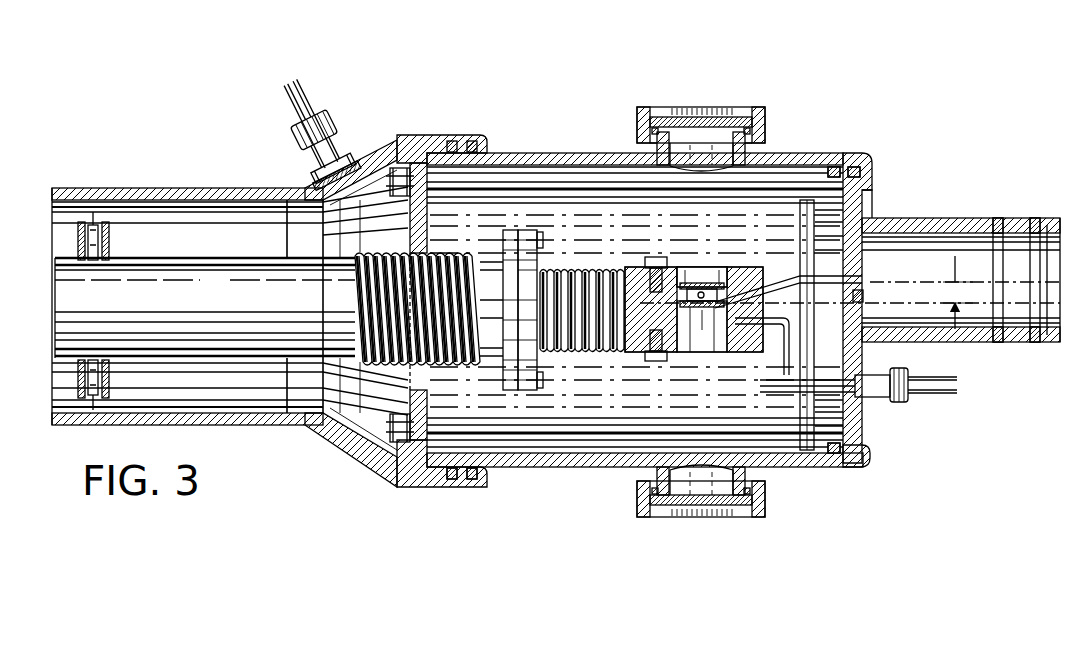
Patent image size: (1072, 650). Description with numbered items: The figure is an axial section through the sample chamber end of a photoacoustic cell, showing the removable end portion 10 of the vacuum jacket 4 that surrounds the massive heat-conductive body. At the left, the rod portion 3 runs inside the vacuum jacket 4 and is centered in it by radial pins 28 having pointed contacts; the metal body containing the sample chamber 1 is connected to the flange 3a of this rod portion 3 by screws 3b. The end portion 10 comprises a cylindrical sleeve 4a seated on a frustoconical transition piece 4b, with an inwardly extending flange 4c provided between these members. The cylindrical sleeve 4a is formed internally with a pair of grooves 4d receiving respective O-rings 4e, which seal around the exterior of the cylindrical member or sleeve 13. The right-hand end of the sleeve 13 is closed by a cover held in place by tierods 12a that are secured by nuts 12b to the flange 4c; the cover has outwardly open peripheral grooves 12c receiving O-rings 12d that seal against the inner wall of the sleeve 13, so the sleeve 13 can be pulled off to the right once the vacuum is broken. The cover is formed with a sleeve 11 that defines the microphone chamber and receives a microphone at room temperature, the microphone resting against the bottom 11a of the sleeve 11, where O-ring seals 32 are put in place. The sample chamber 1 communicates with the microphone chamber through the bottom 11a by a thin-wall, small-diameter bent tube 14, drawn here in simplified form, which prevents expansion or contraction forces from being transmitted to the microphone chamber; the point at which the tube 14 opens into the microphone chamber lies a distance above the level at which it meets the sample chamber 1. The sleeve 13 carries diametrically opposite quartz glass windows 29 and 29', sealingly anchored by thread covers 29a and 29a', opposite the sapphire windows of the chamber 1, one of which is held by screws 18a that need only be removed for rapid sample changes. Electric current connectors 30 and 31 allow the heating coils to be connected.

The sample chamber 1 is at (690, 352).
The rod portion 3 is at (224, 305).
The flange 3a is at (515, 392).
The screws 3b is at (535, 392).
The vacuum jacket 4 is at (262, 425).
The cylindrical sleeve 4a is at (472, 480).
The frustoconical transition piece 4b is at (305, 428).
The inwardly extending flange 4c is at (398, 447).
The grooves 4d is at (470, 142).
The O-rings 4e is at (452, 480).
The end portion 10 is at (575, 78).
The sleeve 11 is at (918, 221).
The bottom of the microphone sleeve 11a is at (860, 298).
The tierods 12a is at (528, 182).
The nuts 12b is at (405, 425).
The peripheral grooves 12c is at (869, 170).
The O-rings 12d is at (845, 460).
The sleeve 13 is at (600, 467).
The tube 14 is at (787, 292).
The screws 18a is at (649, 258).
The radial pins 28 is at (100, 190).
The window 29 is at (684, 117).
The thread cover 29a is at (790, 100).
The window 29' is at (701, 525).
The thread cover 29a' is at (803, 499).
The electric current connector 30 is at (338, 128).
The electric current connector 31 is at (880, 394).
The O-ring seals 32 is at (1030, 220).